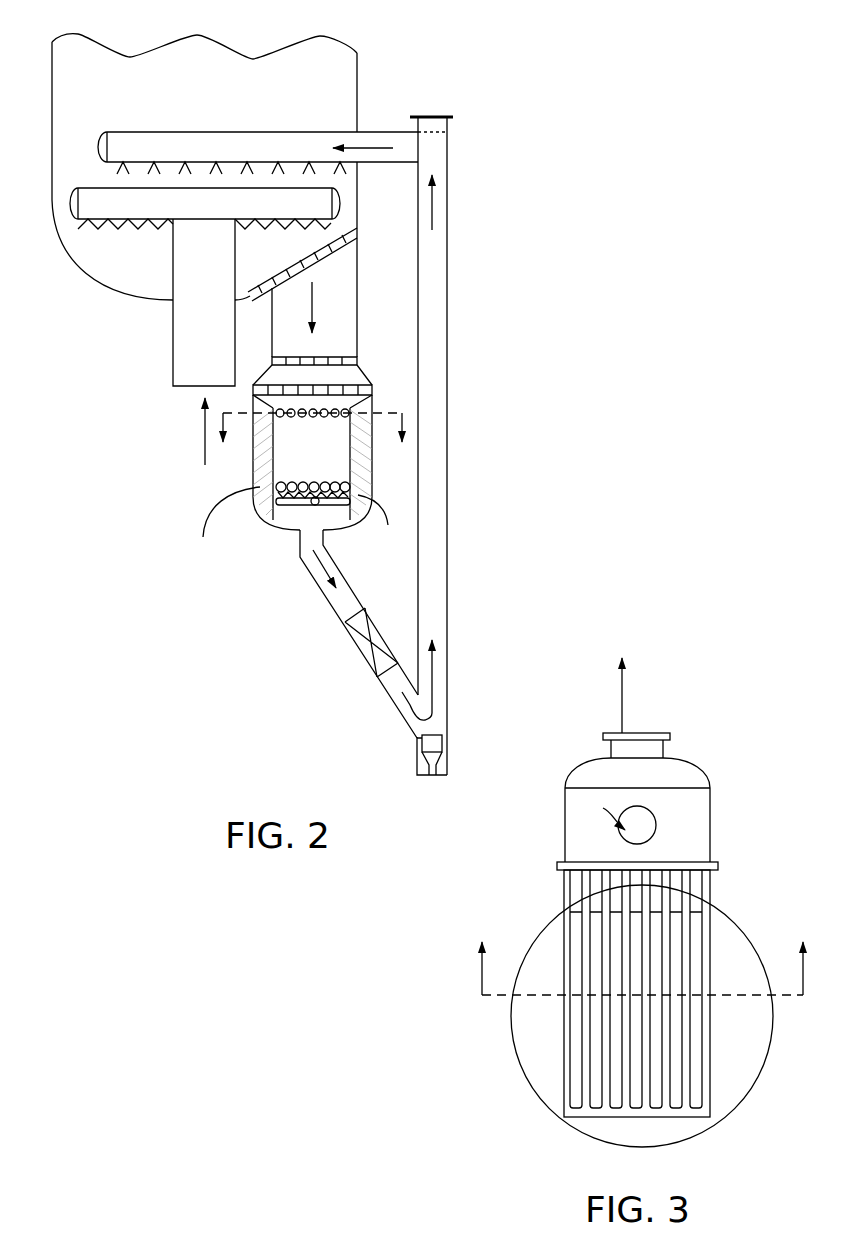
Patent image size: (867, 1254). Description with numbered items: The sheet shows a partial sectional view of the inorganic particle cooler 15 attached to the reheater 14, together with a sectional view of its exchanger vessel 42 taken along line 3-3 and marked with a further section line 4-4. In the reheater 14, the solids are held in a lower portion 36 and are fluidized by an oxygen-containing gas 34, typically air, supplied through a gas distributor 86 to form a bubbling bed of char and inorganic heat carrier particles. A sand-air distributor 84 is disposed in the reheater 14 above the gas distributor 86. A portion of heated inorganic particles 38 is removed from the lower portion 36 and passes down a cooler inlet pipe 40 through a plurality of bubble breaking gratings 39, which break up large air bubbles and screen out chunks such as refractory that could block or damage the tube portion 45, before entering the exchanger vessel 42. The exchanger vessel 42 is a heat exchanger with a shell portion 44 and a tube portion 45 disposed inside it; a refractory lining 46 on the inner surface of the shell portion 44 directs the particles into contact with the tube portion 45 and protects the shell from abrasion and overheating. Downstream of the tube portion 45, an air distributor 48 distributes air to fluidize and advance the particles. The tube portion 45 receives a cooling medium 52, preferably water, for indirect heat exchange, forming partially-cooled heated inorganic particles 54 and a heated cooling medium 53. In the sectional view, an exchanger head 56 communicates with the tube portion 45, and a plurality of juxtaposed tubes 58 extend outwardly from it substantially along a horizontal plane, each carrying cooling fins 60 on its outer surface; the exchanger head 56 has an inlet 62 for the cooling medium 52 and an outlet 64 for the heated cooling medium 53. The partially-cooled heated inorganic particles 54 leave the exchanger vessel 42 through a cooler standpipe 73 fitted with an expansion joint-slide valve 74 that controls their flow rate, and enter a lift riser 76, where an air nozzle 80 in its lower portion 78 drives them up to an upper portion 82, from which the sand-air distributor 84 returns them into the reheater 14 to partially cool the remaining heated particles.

In FIG. 2, the reheater 14 is at (358, 72).
In FIG. 2, the lower portion of the reheater 36 is at (80, 53).
In FIG. 2, the sand-air distributor 84 is at (238, 130).
In FIG. 2, the gas distributor 86 is at (80, 186).
In FIG. 2, the oxygen-containing gas 34 is at (203, 426).
In FIG. 2, the cooler inlet pipe 40 is at (358, 303).
In FIG. 2, the portion of heated inorganic particles 38 is at (314, 300).
In FIG. 2, the bubble breaking gratings 39 is at (356, 244).
In FIG. 2, the exchanger vessel 42 is at (262, 505).
In FIG. 3, the exchanger vessel 42 is at (766, 656).
In FIG. 2, the refractory lining 46 is at (223, 526).
In FIG. 3, the refractory lining 46 is at (750, 1060).
In FIG. 2, the shell portion 44 is at (381, 521).
In FIG. 3, the shell portion 44 is at (748, 1103).
In FIG. 2, the tube portion 45 is at (292, 420).
In FIG. 3, the tube portion 45 is at (695, 887).
In FIG. 2, the air distributor 48 is at (322, 503).
In FIG. 2, the inorganic particle cooler 15 is at (288, 523).
In FIG. 2, the cooler standpipe 73 is at (326, 590).
In FIG. 2, the expansion joint-slide valve 74 is at (362, 645).
In FIG. 2, the lift riser 76 is at (448, 583).
In FIG. 2, the lower portion of the lift riser 78 is at (448, 714).
In FIG. 2, the air nozzle 80 is at (448, 741).
In FIG. 2, the upper portion of the lift riser 82 is at (448, 150).
In FIG. 2, the partially-cooled heated inorganic particles 54 is at (380, 147).
In FIG. 2, the section line 3- 3 is at (314, 457).
In FIG. 3, the heated cooling medium 53 is at (623, 690).
In FIG. 3, the outlet 64 is at (655, 735).
In FIG. 3, the exchanger head 56 is at (712, 807).
In FIG. 3, the inlet 62 is at (646, 816).
In FIG. 3, the cooling medium 52 is at (597, 813).
In FIG. 3, the tubes 58 is at (687, 964).
In FIG. 3, the cooling fins 60 is at (580, 920).
In FIG. 3, the section line 4- 4 is at (645, 937).